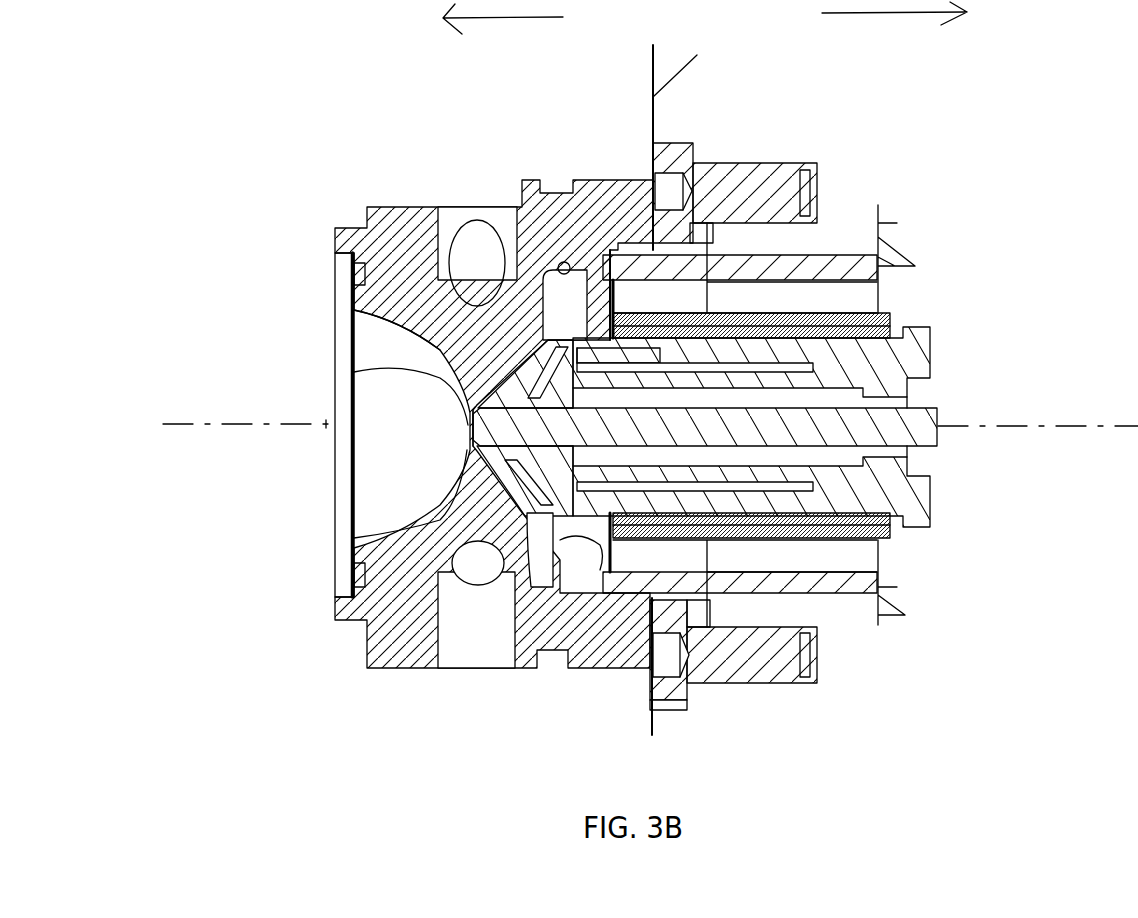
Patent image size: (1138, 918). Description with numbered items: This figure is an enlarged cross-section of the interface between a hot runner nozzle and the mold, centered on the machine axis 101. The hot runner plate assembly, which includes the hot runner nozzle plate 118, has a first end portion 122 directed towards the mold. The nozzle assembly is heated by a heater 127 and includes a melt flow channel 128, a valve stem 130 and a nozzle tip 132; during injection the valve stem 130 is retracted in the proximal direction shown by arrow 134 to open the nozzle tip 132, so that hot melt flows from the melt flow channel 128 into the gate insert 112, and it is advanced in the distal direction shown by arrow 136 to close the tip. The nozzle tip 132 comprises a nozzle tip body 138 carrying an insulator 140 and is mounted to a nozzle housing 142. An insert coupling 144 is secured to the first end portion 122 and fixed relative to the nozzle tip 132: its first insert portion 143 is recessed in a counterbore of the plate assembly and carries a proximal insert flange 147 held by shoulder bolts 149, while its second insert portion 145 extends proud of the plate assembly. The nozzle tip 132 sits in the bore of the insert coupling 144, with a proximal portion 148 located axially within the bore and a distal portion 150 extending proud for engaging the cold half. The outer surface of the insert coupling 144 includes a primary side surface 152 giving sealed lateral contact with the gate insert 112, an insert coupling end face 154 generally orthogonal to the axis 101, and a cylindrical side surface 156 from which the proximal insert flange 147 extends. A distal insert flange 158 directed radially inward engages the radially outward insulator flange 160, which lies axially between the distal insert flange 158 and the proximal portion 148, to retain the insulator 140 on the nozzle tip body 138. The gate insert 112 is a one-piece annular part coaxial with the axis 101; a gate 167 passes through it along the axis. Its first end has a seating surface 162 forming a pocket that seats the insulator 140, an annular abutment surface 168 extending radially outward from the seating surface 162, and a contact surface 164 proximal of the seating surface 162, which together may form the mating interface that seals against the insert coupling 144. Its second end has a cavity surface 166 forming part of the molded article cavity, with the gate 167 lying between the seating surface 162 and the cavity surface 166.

The machine axis 101 is at (1067, 430).
The gate insert 112 is at (333, 234).
The hot runner nozzle plate 118 is at (725, 95).
The first end portion 122 is at (659, 78).
The heater 127 is at (887, 532).
The melt flow channel 128 is at (847, 397).
The valve stem 130 is at (917, 430).
The nozzle tip 132 is at (467, 672).
The arrow 134 is at (902, 13).
The arrow 136 is at (508, 17).
The nozzle tip body 138 is at (615, 375).
The insulator 140 is at (437, 522).
The nozzle housing 142 is at (903, 497).
The first insert portion 143 is at (710, 259).
The insert coupling 144 is at (621, 675).
The second insert portion 145 is at (596, 368).
The proximal insert flange 147 is at (710, 612).
The proximal portion 148 is at (640, 170).
The shoulder bolts 149 is at (778, 205).
The distal portion 150 is at (354, 372).
The primary side surface 152 is at (595, 650).
The insert coupling end face 154 is at (605, 266).
The cylindrical side surface 156 is at (672, 255).
The distal insert flange 158 is at (492, 530).
The insulator flange 160 is at (523, 655).
The seating surface 162 is at (345, 336).
The contact surface 164 is at (558, 266).
The cavity surface 166 is at (352, 488).
The gate 167 is at (432, 432).
The abutment surface 168 is at (553, 300).